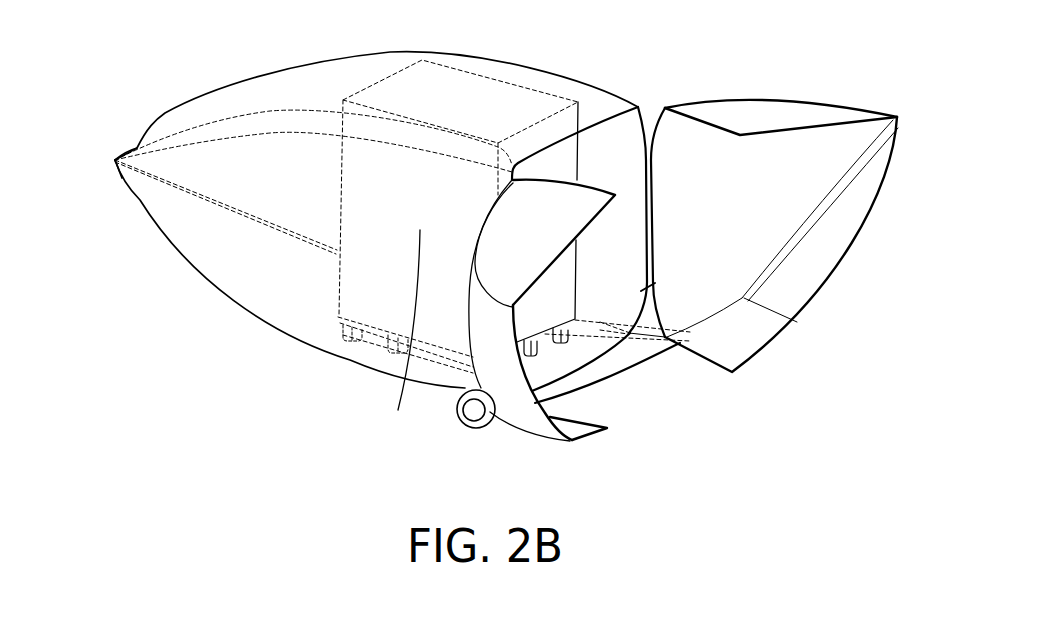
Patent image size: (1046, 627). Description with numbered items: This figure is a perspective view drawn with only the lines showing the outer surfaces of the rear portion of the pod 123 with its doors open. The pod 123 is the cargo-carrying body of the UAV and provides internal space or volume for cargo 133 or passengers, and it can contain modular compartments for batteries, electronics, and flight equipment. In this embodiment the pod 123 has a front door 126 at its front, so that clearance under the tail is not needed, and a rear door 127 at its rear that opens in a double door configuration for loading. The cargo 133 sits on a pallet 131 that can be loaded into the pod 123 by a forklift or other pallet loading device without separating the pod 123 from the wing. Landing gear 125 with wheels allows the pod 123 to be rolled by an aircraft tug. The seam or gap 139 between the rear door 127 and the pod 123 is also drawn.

The pod 123 is at (247, 310).
The landing gear 125 is at (473, 410).
The front door 126 is at (135, 147).
The rear door 127 is at (852, 178).
The pallet 131 is at (398, 410).
The cargo 133 is at (467, 122).
The seam gap 139 is at (648, 110).